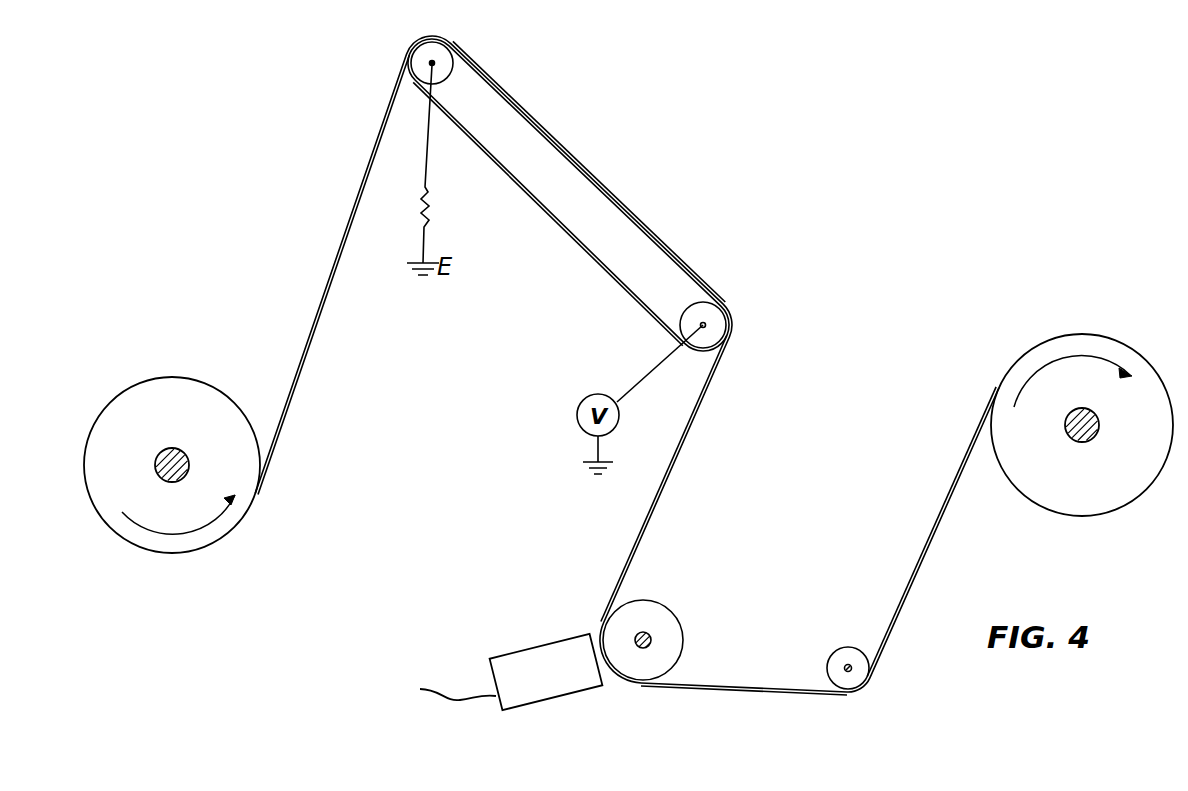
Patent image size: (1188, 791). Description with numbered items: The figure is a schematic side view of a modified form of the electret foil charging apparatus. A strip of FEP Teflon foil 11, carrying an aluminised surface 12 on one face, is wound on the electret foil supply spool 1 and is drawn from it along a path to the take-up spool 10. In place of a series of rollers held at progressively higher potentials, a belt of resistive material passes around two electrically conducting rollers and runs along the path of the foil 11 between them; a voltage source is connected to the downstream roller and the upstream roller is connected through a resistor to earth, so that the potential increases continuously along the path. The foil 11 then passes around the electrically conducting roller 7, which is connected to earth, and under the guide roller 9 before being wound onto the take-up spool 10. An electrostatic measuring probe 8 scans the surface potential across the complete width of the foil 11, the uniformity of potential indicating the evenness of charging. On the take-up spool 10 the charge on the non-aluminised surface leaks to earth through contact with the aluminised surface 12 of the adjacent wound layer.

The electret foil supply spool 1 is at (213, 398).
The electrically conducting roller 7 is at (668, 629).
The electrostatic measuring probe 8 is at (538, 656).
The guide roller 9 is at (843, 658).
The take-up spool 10 is at (1127, 485).
The foil 11 is at (312, 336).
The aluminised surface 12 is at (358, 173).